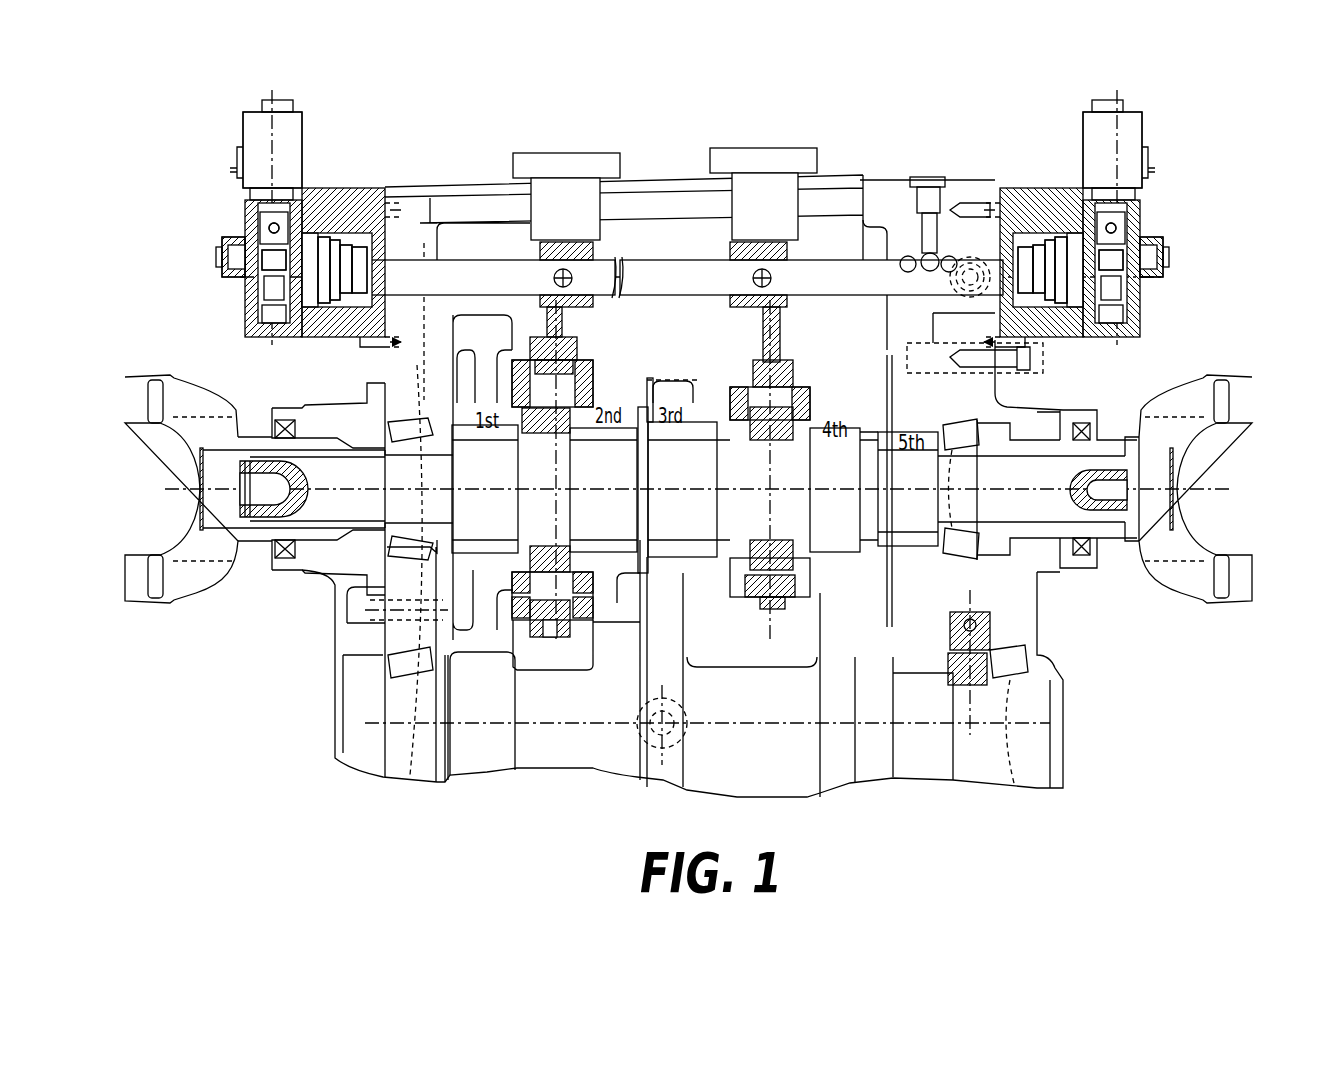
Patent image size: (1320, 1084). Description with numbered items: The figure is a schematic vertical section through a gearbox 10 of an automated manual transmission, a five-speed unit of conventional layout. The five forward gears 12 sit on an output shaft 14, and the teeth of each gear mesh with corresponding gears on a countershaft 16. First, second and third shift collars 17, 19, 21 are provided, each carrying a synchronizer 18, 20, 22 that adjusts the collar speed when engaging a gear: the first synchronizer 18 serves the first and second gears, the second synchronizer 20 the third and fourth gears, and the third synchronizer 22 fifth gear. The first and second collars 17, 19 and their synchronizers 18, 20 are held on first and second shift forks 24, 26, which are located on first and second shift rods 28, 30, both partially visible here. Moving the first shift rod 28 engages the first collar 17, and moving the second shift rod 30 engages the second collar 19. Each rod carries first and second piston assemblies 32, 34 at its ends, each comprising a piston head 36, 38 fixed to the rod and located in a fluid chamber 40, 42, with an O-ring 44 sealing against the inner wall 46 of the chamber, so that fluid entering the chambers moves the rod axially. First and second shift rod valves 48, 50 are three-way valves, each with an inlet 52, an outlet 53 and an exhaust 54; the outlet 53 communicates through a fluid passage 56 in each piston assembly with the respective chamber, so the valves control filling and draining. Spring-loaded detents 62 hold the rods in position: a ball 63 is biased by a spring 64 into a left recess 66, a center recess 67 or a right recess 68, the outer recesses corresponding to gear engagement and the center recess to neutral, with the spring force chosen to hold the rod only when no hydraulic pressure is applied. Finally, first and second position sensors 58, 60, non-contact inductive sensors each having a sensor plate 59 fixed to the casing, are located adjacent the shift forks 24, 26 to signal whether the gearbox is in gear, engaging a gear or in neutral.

The gearbox 10 is at (258, 650).
The forward gears 12 is at (487, 640).
The output shaft 14 is at (345, 498).
The countershaft 16 is at (402, 712).
The first shift collar 17 is at (527, 593).
The first synchronizer 18 is at (541, 640).
The second shift collar 19 is at (777, 605).
The second synchronizer 20 is at (757, 620).
The third shift collar 21 is at (983, 627).
The third synchronizer 22 is at (953, 683).
The first shift fork 24 is at (583, 247).
The second shift fork 26 is at (732, 252).
The first shift rod 28 is at (518, 274).
The second shift rod 30 is at (838, 272).
The first piston assembly 32 is at (375, 230).
The second piston assembly 34 is at (1042, 233).
The piston head 36 is at (340, 297).
The piston head 38 is at (1022, 253).
The fluid chamber 40 is at (330, 285).
The fluid chamber 42 is at (1053, 253).
The O-ring 44 is at (363, 230).
The inner wall 46 is at (347, 250).
The first shift rod valve 48 is at (258, 132).
The second shift rod valve 50 is at (1127, 137).
The inlet 52 is at (270, 253).
The outlet 53 is at (290, 250).
The exhaust 54 is at (273, 227).
The fluid passage 56 is at (310, 237).
The first position sensor 58 is at (535, 158).
The sensor plate 59 is at (570, 190).
The second position sensor 60 is at (738, 160).
The spring-loaded detent 62 is at (925, 173).
The ball 63 is at (935, 266).
The spring 64 is at (922, 240).
The left recess 66 is at (918, 268).
The center recess 67 is at (922, 272).
The right recess 68 is at (928, 276).